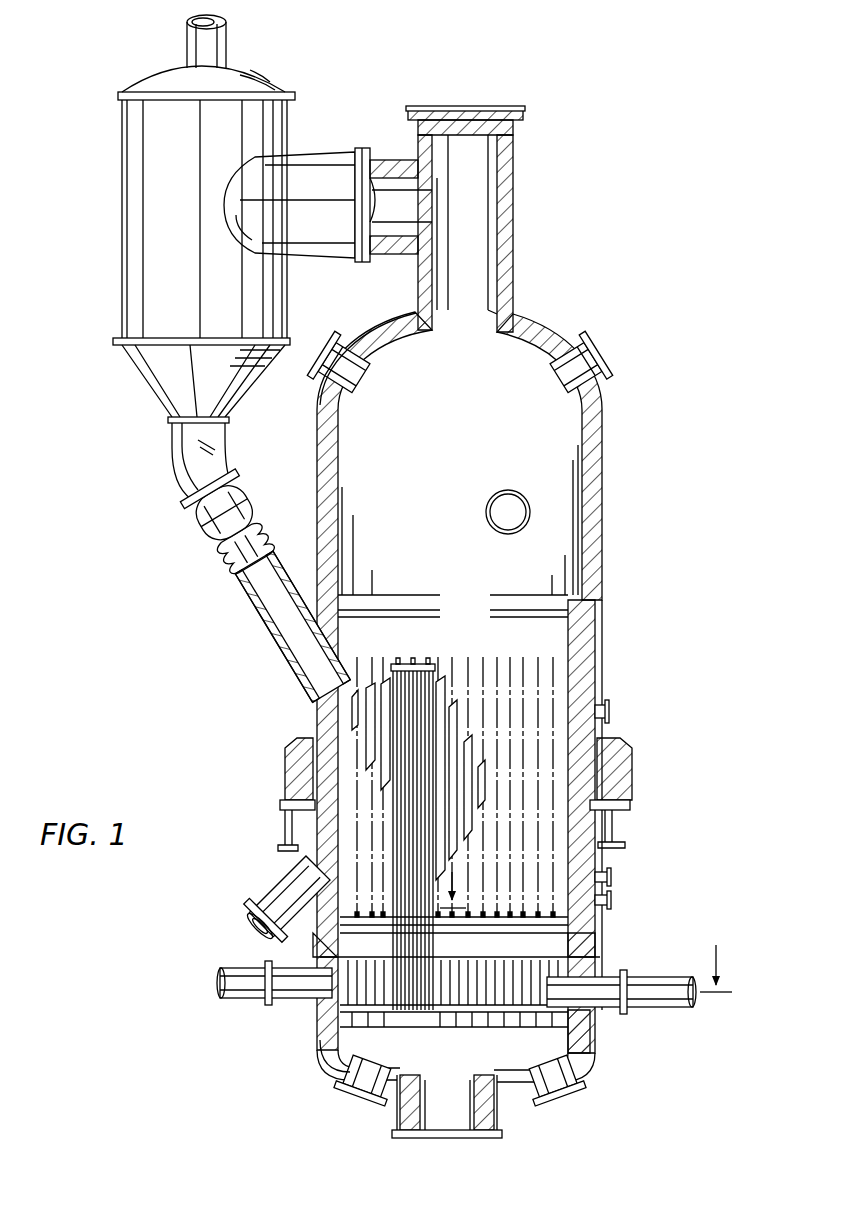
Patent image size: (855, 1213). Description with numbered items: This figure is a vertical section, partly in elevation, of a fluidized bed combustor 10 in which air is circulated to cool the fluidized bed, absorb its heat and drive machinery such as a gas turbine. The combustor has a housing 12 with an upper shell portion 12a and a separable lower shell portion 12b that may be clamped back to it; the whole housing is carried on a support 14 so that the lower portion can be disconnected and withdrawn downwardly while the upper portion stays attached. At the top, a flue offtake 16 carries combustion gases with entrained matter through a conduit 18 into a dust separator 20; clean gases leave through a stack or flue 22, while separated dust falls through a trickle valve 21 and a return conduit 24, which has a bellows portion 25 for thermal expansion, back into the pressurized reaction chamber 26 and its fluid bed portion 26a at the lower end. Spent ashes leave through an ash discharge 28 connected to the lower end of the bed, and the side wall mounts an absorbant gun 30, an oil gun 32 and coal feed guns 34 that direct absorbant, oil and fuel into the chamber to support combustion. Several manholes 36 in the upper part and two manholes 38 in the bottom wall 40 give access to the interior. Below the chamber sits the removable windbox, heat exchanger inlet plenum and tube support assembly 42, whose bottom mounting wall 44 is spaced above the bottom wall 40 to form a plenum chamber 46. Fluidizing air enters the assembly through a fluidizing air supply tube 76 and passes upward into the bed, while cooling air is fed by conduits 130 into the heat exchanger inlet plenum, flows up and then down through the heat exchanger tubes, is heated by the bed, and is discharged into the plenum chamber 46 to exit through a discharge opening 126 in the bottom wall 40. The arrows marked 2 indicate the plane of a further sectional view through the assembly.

The combustor 10 is at (512, 708).
The housing 12 is at (498, 708).
The upper shell portion 12a is at (598, 737).
The lower shell portion 12b is at (485, 1057).
The support 14 is at (625, 778).
The flue offtake 16 is at (482, 303).
The conduit 18 is at (313, 172).
The dust separator 20 is at (215, 212).
The trickle valve 21 is at (198, 520).
The stack or flue 22 is at (207, 21).
The return conduit 24 is at (237, 582).
The bellows portion 25 is at (225, 560).
The reaction chamber 26 is at (508, 372).
The fluid bed portion 26a is at (555, 695).
The ash discharge 28 is at (262, 900).
The absorbant gun 30 is at (603, 712).
The oil gun 32 is at (607, 877).
The coal feed guns 34 is at (612, 900).
The manholes 36 is at (470, 112).
The manholes 38 is at (355, 1095).
The bottom wall 40 is at (396, 1042).
The removable windbox, heat exchanger inlet plenum and heat exchanger tube support a 42 is at (598, 948).
The bottom mounting wall 44 is at (578, 1030).
The plenum chamber 46 is at (345, 1045).
The fluidizing air supply tube 76 is at (240, 972).
The discharge opening 126 is at (455, 1125).
The conduits 130 is at (665, 1010).
The section line FIG. 2 is at (587, 931).